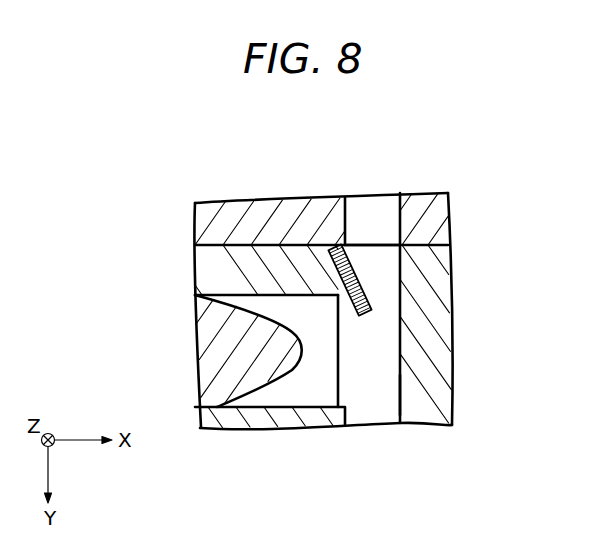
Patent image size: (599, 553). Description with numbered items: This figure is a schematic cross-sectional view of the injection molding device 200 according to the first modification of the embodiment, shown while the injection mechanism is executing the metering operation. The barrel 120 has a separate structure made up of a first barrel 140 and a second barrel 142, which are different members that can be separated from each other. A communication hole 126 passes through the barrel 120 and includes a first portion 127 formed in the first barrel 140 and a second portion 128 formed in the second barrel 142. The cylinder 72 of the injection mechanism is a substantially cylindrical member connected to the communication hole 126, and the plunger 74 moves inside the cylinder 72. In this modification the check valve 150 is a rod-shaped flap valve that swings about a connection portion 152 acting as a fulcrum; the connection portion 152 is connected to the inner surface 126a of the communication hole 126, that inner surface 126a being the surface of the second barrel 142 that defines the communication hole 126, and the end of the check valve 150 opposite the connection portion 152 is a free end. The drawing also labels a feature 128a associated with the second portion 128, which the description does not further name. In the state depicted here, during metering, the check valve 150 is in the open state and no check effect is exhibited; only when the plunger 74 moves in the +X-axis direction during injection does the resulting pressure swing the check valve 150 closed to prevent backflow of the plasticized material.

The injection molding device 200 is at (478, 162).
The barrel 120 is at (241, 246).
The first barrel 140 is at (228, 222).
The second barrel 142 is at (228, 275).
The plunger 74 is at (237, 352).
The cylinder 72 is at (306, 386).
The communication hole 126 is at (478, 344).
The first portion 127 is at (388, 220).
The second portion 128 is at (380, 282).
The inner surface 126a is at (400, 388).
The upper surface of lower layer 128a is at (374, 236).
The check valve 150 is at (344, 221).
The connection portion 152 is at (335, 246).